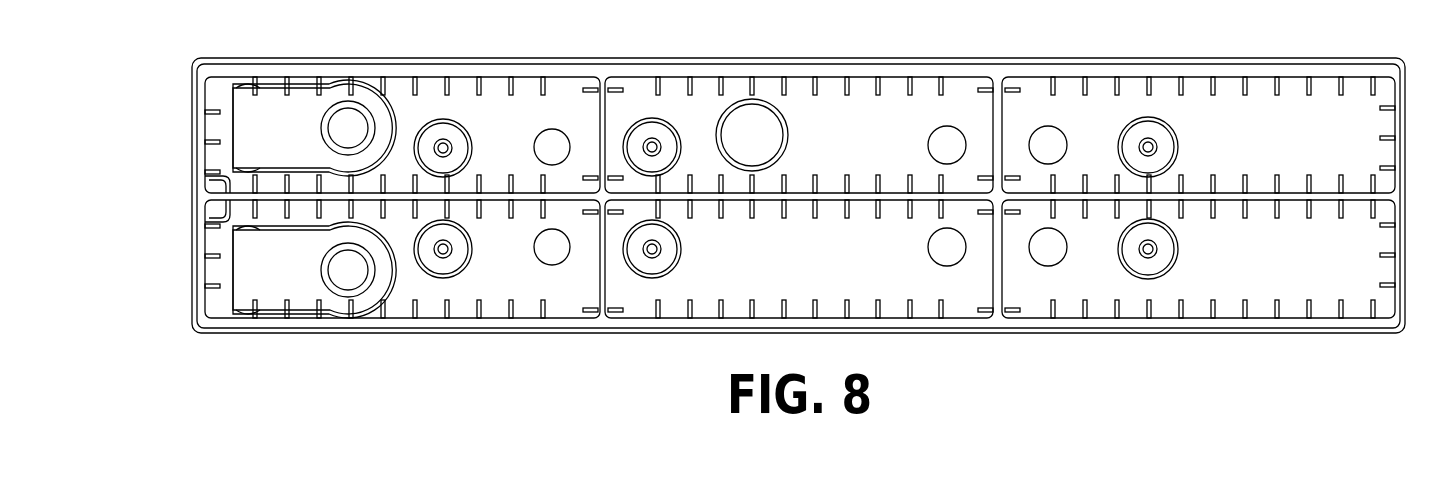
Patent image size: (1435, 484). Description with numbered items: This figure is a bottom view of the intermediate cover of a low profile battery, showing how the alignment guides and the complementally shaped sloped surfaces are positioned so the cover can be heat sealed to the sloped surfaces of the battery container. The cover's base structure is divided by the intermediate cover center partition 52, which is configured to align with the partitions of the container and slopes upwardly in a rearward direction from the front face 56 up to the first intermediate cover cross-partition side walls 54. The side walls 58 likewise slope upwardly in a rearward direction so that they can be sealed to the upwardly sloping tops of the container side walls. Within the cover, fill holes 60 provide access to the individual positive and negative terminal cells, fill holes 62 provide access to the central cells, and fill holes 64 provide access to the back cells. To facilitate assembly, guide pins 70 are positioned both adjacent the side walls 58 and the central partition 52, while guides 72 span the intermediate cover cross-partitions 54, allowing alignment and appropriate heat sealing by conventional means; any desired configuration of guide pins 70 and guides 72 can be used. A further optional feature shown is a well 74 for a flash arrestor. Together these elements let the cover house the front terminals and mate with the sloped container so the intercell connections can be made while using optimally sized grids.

The intermediate cover center partition 52 is at (575, 192).
The intermediate cover cross-partition side walls 54 is at (608, 112).
The front face 56 is at (184, 120).
The side walls 58 is at (315, 62).
The fill holes 60 is at (443, 148).
The fill holes 62 is at (652, 148).
The fill holes 64 is at (1148, 150).
The guide pins 70 is at (480, 78).
The guides 72 is at (597, 310).
The well 74 is at (770, 108).